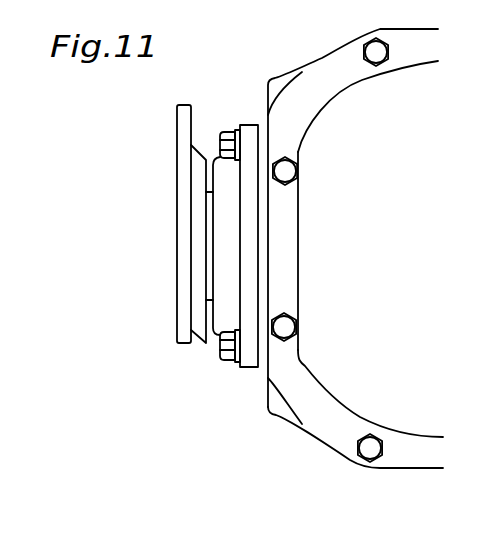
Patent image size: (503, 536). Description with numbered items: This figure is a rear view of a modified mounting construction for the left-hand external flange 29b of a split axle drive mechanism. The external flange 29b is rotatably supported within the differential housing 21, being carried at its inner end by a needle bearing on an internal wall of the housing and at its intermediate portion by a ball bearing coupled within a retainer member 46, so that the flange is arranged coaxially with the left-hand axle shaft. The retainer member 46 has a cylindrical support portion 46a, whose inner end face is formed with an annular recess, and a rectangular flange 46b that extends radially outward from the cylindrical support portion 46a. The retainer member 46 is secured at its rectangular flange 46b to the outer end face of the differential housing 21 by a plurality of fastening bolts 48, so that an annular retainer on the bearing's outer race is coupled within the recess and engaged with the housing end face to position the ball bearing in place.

The differential housing 21 is at (277, 86).
The external flange 29b is at (180, 302).
The retainer member 46 is at (208, 245).
The cylindrical support portion 46a is at (223, 208).
The rectangular flange 46b is at (248, 268).
The fastening bolts 48 is at (229, 131).